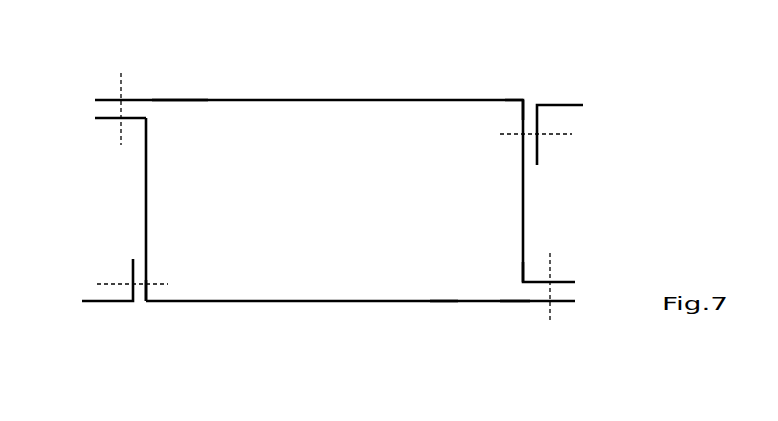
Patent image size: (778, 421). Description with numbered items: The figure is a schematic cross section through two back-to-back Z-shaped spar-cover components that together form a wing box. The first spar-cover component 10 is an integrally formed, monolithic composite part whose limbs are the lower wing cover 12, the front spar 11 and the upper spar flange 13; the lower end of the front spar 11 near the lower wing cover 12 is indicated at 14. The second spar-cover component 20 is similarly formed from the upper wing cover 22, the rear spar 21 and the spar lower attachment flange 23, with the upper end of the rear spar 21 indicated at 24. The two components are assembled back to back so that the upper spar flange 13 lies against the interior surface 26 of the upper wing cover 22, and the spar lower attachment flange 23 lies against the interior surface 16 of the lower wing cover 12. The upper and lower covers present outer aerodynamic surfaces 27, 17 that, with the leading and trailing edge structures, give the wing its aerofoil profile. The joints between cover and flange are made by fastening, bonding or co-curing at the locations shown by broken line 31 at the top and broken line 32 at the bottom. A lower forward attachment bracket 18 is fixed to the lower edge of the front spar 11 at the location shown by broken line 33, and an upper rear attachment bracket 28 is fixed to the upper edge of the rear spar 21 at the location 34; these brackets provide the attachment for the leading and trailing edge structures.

The first spar-cover component 10 is at (274, 302).
The front spar 11 is at (146, 205).
The lower wing cover 12 is at (403, 302).
The upper spar flange 13 is at (105, 118).
The lower end of side wall 14 is at (147, 302).
The interior surface 16 is at (444, 299).
The outer aerodynamic surface 17 is at (515, 303).
The lower forward attachment bracket 18 is at (96, 303).
The second spar-cover component 20 is at (327, 99).
The rear spar 21 is at (523, 187).
The upper wing cover 22 is at (428, 99).
The spar lower attachment flange 23 is at (562, 280).
The upper right corner 24 is at (524, 98).
The interior surface 26 is at (193, 102).
The outer aerodynamic surface 27 is at (166, 98).
The upper rear attachment bracket 28 is at (572, 103).
The broken line 31 is at (118, 73).
The broken line 32 is at (550, 315).
The broken line 33 is at (160, 280).
The attachment location 34 is at (515, 135).